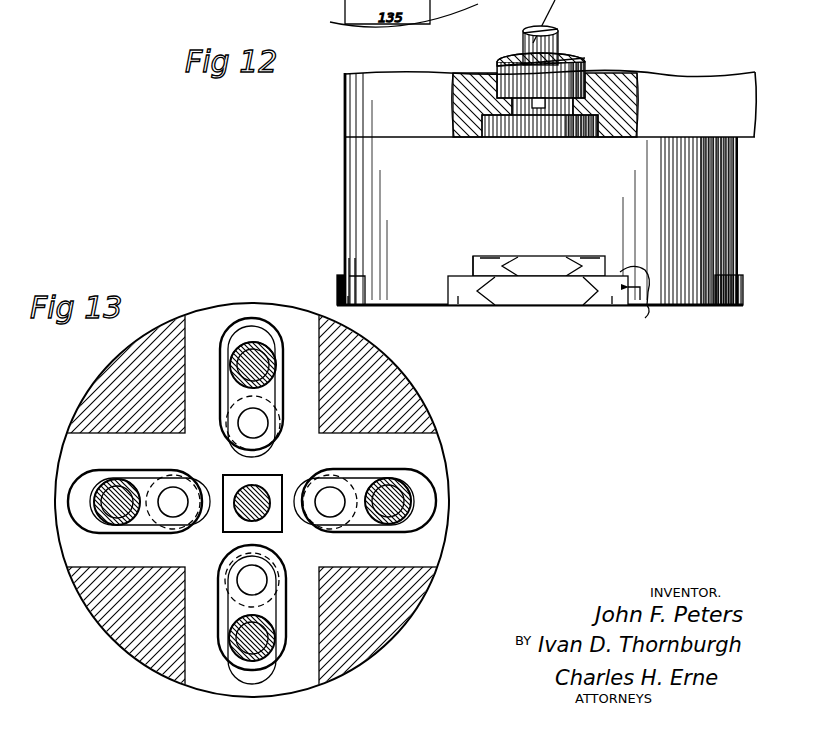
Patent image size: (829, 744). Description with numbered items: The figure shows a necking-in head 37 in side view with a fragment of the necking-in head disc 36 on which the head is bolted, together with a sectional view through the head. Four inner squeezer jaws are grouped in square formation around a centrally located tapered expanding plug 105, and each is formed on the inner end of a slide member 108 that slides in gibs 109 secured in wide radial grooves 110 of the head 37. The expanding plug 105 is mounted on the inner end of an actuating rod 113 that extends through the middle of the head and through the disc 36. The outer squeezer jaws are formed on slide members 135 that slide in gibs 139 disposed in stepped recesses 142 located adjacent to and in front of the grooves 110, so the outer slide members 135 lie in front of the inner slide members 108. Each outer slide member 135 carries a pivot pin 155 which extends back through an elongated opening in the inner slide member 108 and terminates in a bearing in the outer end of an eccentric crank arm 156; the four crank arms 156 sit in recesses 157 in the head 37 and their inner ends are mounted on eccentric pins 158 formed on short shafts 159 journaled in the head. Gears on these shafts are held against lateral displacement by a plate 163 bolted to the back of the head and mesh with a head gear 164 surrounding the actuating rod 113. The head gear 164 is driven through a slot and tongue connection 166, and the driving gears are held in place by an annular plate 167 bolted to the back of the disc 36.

In FIG. 12, the necking-in head disc 36 is at (625, 83).
In FIG. 12, the necking-in head 37 is at (360, 178).
In FIG. 13, the necking-in head 37 is at (397, 391).
In FIG. 13, the tapered expanding plug 105 is at (268, 482).
In FIG. 12, the slide member 108 is at (539, 266).
In FIG. 12, the gib 109 is at (493, 262).
In FIG. 13, the gib 109 is at (252, 505).
In FIG. 12, the radial groove 110 is at (470, 257).
In FIG. 13, the actuating rod 113 is at (240, 510).
In FIG. 12, the slide member 135 is at (538, 290).
In FIG. 12, the gib 139 is at (460, 298).
In FIG. 12, the stepped recess 142 is at (449, 283).
In FIG. 13, the pivot pin 155 is at (112, 503).
In FIG. 13, the eccentric crank arm 156 is at (138, 484).
In FIG. 13, the recess 157 is at (78, 487).
In FIG. 13, the eccentric pin 158 is at (173, 500).
In FIG. 13, the short shaft 159 is at (142, 523).
In FIG. 12, the plate 163 is at (567, 137).
In FIG. 12, the head gear 164 is at (527, 110).
In FIG. 12, the slot and tongue connection 166 is at (583, 67).
In FIG. 12, the annular plate 167 is at (540, 98).